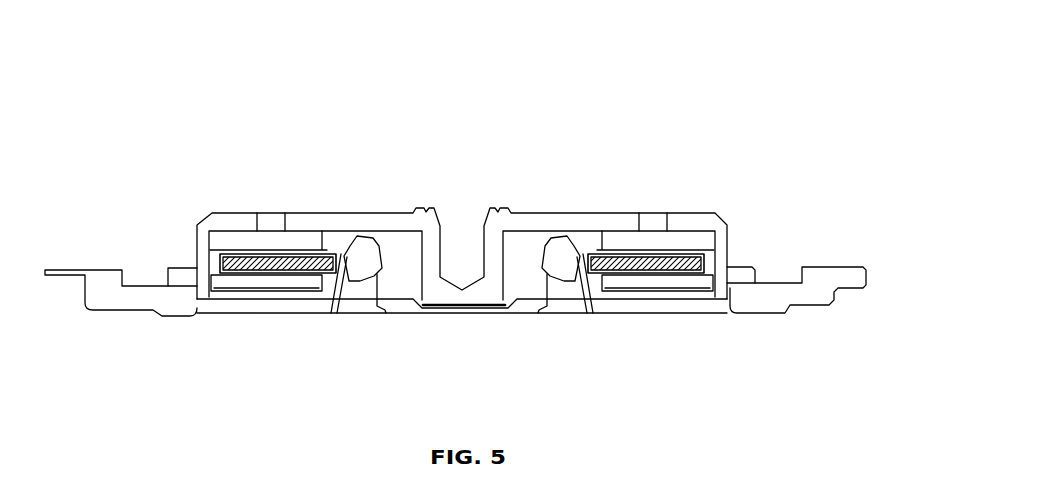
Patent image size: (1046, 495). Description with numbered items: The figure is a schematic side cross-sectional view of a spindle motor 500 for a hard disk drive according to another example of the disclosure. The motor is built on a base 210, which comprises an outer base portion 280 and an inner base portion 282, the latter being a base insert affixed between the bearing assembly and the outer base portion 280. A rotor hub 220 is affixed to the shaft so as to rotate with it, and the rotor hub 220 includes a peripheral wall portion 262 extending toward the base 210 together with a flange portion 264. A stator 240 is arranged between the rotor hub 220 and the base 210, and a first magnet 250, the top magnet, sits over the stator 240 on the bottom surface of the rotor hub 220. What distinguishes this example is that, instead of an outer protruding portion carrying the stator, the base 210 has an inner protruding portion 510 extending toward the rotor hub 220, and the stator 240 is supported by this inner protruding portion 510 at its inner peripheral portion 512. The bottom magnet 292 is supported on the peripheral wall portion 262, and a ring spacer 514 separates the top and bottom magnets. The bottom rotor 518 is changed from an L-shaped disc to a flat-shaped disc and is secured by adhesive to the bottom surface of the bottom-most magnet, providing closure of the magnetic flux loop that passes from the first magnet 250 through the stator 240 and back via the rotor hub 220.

The spindle motor 500 is at (694, 93).
The base 210 is at (803, 303).
The rotor hub 220 is at (311, 218).
The stator 240 is at (595, 250).
The first magnet 250 is at (238, 243).
The peripheral wall portion 262 is at (197, 260).
The flange portion 264 is at (747, 262).
The outer base portion 280 is at (138, 312).
The inner base portion 282 is at (217, 315).
The bottom magnet 292 is at (238, 292).
The inner protruding portion 510 is at (337, 278).
The inner peripheral portion 512 is at (333, 222).
The ring spacer 514 is at (728, 245).
The bottom rotor 518 is at (627, 290).